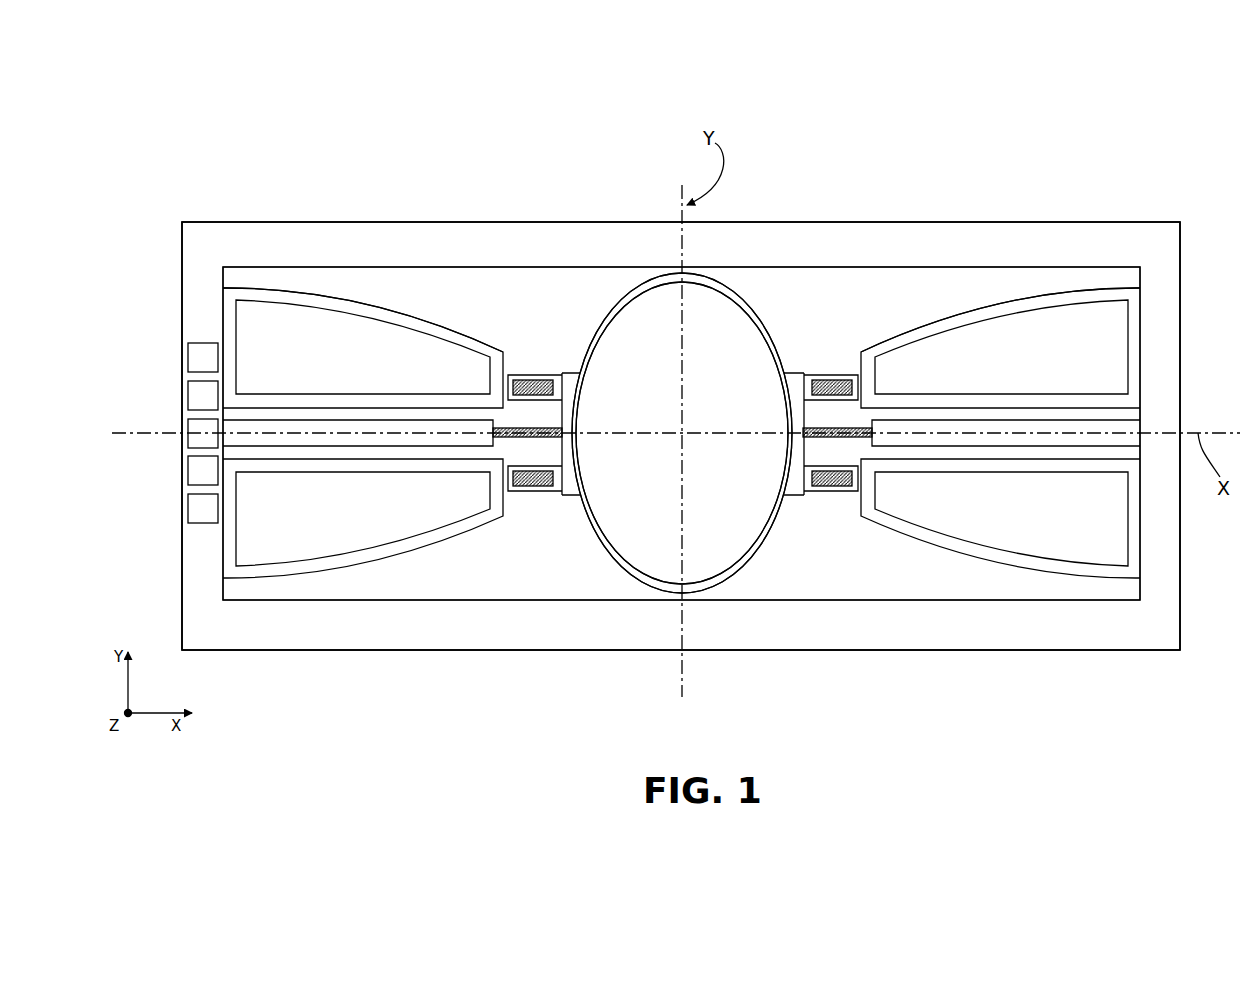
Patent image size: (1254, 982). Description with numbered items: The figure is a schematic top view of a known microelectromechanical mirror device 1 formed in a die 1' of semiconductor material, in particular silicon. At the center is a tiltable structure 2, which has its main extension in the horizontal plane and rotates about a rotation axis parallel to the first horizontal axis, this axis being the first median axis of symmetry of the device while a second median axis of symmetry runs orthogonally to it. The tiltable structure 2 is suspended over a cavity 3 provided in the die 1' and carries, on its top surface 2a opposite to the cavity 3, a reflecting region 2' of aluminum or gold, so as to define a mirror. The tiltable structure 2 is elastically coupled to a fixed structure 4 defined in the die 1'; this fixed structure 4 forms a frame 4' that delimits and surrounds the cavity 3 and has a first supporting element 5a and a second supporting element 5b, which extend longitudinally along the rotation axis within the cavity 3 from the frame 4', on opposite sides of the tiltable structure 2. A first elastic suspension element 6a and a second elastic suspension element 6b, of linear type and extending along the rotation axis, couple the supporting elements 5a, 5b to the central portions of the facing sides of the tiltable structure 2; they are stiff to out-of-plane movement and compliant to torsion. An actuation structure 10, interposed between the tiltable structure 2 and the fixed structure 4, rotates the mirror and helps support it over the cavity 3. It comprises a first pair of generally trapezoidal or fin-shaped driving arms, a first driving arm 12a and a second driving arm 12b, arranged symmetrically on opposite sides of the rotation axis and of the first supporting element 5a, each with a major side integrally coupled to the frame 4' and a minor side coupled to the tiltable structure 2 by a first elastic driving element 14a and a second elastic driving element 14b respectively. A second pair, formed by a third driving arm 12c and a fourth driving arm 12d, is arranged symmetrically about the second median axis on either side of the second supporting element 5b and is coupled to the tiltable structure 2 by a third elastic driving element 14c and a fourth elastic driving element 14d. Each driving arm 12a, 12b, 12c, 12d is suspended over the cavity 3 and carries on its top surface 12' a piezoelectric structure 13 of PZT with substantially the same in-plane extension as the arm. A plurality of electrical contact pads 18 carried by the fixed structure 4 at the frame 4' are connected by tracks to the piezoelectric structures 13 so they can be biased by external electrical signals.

The microelectromechanical mirror device 1 is at (639, 386).
The die 1' is at (645, 436).
The tiltable structure 2 is at (682, 490).
The reflecting region 2' is at (682, 433).
The top surface 2a is at (644, 282).
The cavity 3 is at (605, 596).
The fixed structure 4 is at (681, 387).
The frame 4' is at (681, 397).
The first supporting element 5a is at (285, 440).
The second supporting element 5b is at (1062, 438).
The first elastic suspension element 6a is at (510, 427).
The second elastic suspension element 6b is at (820, 427).
The actuation structure 10 is at (301, 287).
The top surface 12' is at (681, 229).
The first driving arm 12a is at (355, 300).
The second driving arm 12b is at (405, 547).
The third driving arm 12c is at (1015, 302).
The fourth driving arm 12d is at (950, 555).
The piezoelectric structure 13 is at (423, 350).
The first elastic driving element 14a is at (526, 377).
The second elastic driving element 14b is at (542, 491).
The third elastic driving element 14c is at (835, 375).
The fourth elastic driving element 14d is at (830, 491).
The electrical contact pads 18 is at (200, 430).